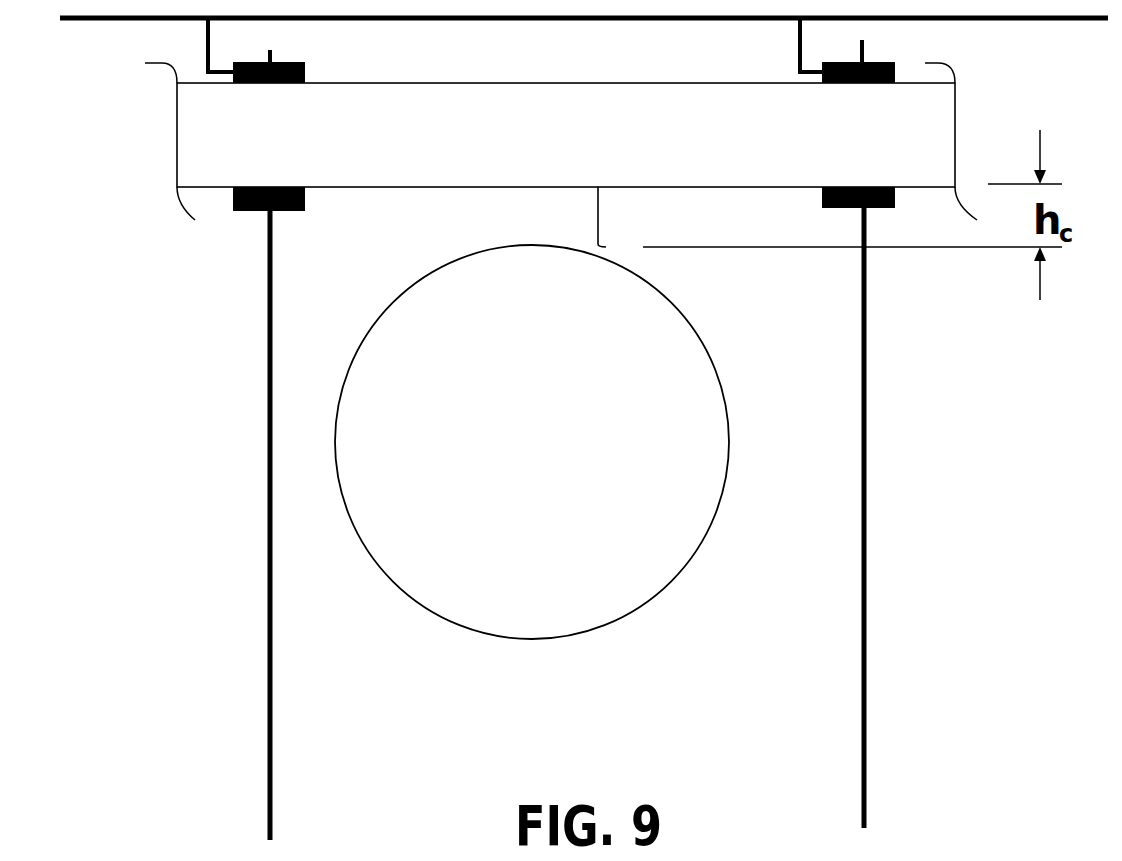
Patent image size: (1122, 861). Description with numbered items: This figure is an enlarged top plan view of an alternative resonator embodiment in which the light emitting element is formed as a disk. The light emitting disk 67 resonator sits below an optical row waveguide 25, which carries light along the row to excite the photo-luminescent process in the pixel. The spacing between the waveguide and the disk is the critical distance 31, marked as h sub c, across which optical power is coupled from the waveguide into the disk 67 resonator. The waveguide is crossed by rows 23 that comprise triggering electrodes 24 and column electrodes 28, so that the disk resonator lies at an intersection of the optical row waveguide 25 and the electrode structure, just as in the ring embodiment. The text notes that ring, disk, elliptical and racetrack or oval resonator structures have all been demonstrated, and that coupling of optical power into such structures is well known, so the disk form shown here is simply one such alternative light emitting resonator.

The rows 23 is at (130, 21).
The triggering electrodes 24 is at (823, 61).
The optical row waveguide 25 is at (213, 167).
The column electrodes 28 is at (268, 598).
The critical distance 31 is at (596, 216).
The light emitting disk resonator 67 is at (575, 453).